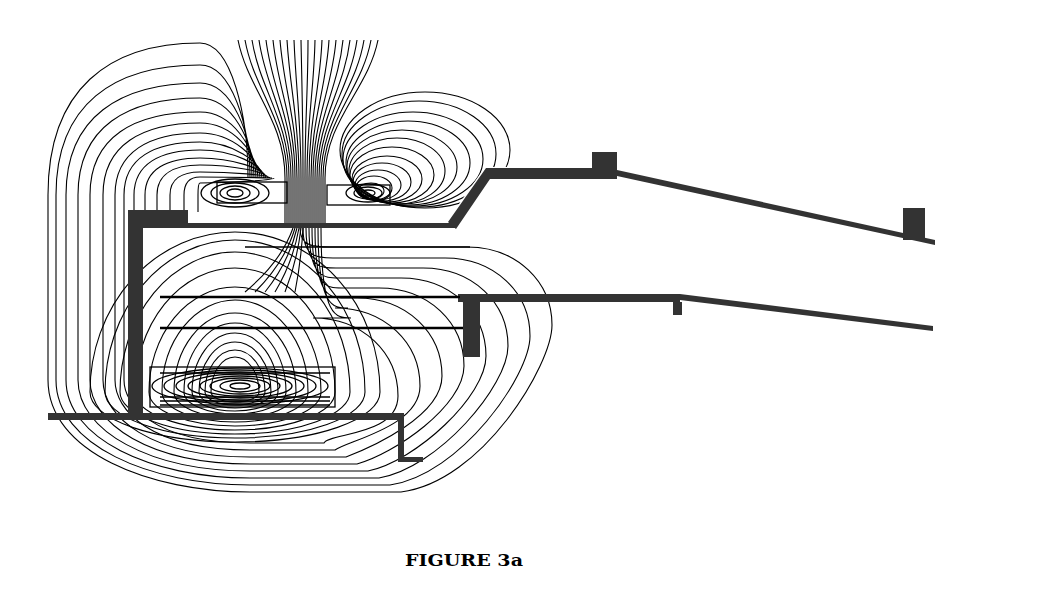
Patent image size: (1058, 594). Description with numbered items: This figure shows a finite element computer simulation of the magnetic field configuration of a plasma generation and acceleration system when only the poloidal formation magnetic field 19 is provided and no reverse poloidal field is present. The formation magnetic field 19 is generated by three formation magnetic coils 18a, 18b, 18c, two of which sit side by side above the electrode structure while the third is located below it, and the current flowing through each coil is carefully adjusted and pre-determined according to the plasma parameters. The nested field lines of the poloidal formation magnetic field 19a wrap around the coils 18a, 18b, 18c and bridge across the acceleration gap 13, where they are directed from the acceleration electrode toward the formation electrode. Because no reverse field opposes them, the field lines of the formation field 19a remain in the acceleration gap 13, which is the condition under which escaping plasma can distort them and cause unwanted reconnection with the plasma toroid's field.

The formation magnetic coil 18a is at (243, 173).
The formation magnetic coil 18b is at (373, 187).
The formation magnetic coil 18c is at (212, 417).
The poloidal formation magnetic field 19 is at (323, 275).
The magnetic field lines of the poloidal formation magnetic field 19a is at (464, 281).
The acceleration gap 13 is at (470, 300).